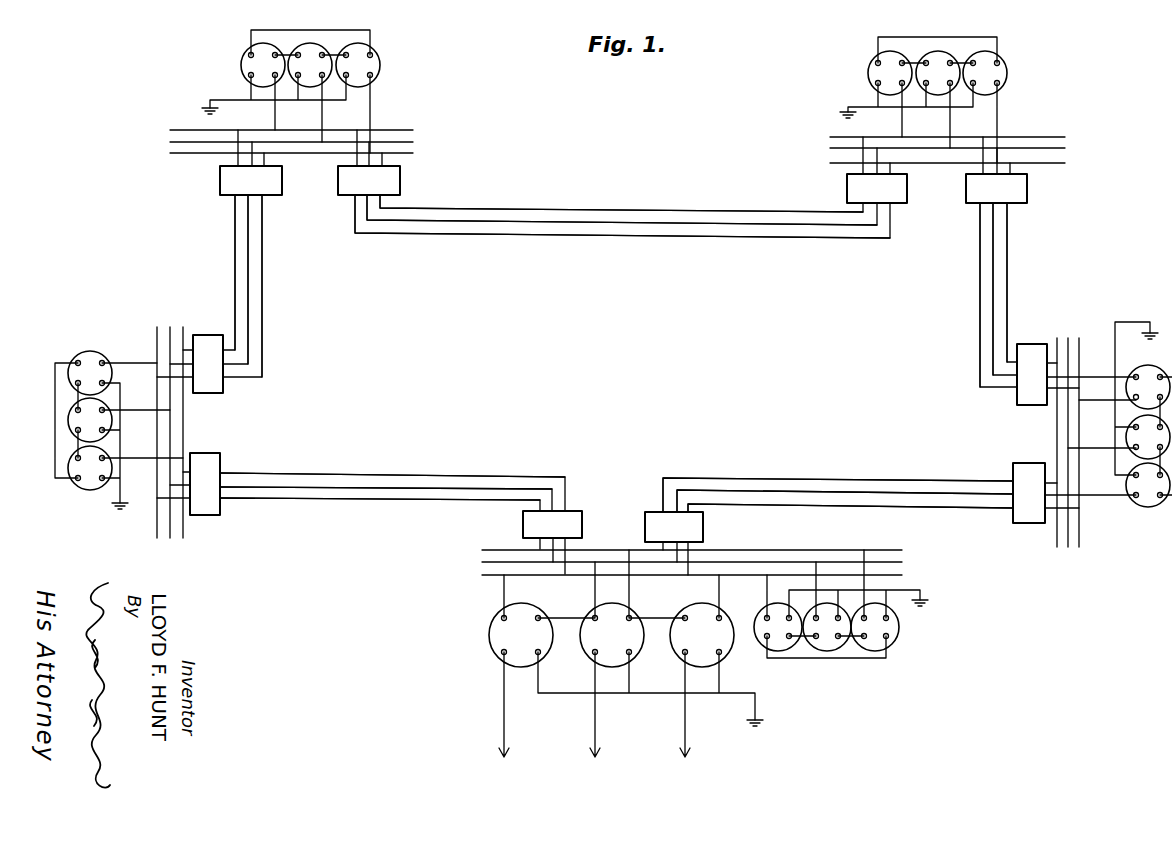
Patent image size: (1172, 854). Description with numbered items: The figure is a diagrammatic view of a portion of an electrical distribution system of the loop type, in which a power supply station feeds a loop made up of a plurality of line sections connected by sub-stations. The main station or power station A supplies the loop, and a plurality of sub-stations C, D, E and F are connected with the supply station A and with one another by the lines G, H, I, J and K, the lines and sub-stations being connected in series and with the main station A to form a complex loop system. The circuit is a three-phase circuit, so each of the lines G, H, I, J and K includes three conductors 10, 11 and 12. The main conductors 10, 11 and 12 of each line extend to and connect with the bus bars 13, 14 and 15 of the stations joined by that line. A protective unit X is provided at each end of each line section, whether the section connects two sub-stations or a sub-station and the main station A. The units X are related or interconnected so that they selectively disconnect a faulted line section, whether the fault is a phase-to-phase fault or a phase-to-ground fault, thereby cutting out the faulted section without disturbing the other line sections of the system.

The main conductor 10 is at (235, 236).
The main conductor 11 is at (248, 253).
The main conductor 12 is at (262, 270).
The bus bar 13 is at (413, 130).
The bus bar 14 is at (413, 142).
The bus bar 15 is at (413, 153).
The main station A is at (482, 639).
The sub-station C is at (1153, 519).
The sub-station D is at (1019, 80).
The sub-station E is at (391, 69).
The sub-station F is at (96, 341).
The line G is at (864, 472).
The line H is at (975, 281).
The line I is at (644, 205).
The line J is at (273, 310).
The line K is at (367, 468).
The unit X is at (213, 183).